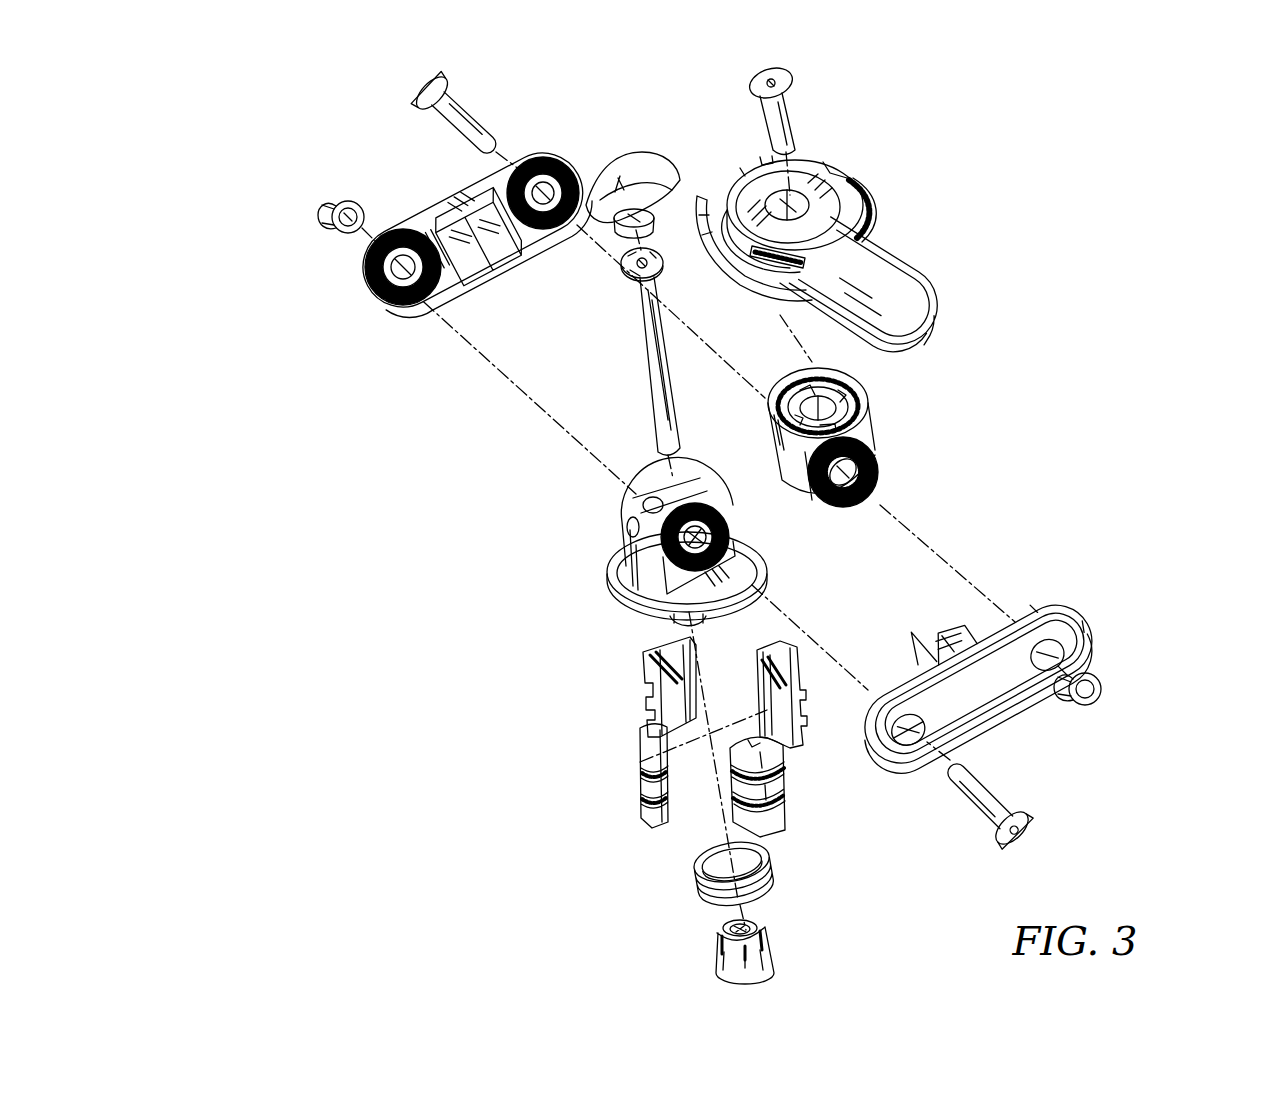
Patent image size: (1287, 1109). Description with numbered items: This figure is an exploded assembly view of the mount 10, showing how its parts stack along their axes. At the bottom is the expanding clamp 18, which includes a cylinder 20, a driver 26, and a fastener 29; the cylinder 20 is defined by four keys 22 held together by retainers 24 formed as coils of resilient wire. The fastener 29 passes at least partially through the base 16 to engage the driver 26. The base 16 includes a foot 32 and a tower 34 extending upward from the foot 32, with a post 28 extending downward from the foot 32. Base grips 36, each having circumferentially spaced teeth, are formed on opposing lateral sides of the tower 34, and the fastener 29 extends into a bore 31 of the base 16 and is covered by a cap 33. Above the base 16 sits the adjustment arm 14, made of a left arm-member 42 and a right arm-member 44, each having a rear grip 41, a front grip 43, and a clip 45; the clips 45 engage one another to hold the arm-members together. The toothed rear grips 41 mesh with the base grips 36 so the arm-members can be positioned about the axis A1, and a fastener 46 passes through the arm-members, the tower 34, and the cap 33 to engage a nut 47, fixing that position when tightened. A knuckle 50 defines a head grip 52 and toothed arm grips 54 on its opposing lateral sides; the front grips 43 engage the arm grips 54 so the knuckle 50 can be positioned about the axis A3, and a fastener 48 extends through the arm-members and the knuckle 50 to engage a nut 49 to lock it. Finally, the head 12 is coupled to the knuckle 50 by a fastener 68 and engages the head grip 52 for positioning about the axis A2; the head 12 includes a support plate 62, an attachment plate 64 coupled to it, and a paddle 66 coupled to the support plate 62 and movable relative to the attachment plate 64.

The mount 10 is at (1075, 186).
The head 12 is at (866, 178).
The adjustment arm 14 is at (366, 141).
The base 16 is at (598, 541).
The expanding clamp 18 is at (604, 735).
The cylinder 20 is at (614, 765).
The keys 22 is at (722, 757).
The retainers 24 is at (684, 875).
The driver 26 is at (786, 940).
The post 28 is at (660, 634).
The fastener 29 is at (638, 368).
The bore 31 is at (690, 484).
The foot 32 is at (614, 599).
The cap 33 is at (633, 165).
The tower 34 is at (626, 500).
The base grips 36 is at (722, 540).
The rear grip 41 is at (392, 312).
The left arm-member 42 is at (445, 199).
The front grip 43 is at (568, 184).
The right arm-member 44 is at (1082, 600).
The clip 45 is at (534, 263).
The fastener 46 is at (1014, 784).
The nut 47 is at (333, 190).
The fastener 48 is at (488, 126).
The nut 49 is at (1108, 666).
The knuckle 50 is at (902, 420).
The head grip 52 is at (856, 382).
The arm grips 54 is at (878, 472).
The support plate 62 is at (708, 246).
The attachment plate 64 is at (850, 206).
The paddle 66 is at (916, 260).
The fastener 68 is at (800, 113).
The axis A1 is at (483, 352).
The axis A2 is at (804, 342).
The axis A3 is at (906, 550).